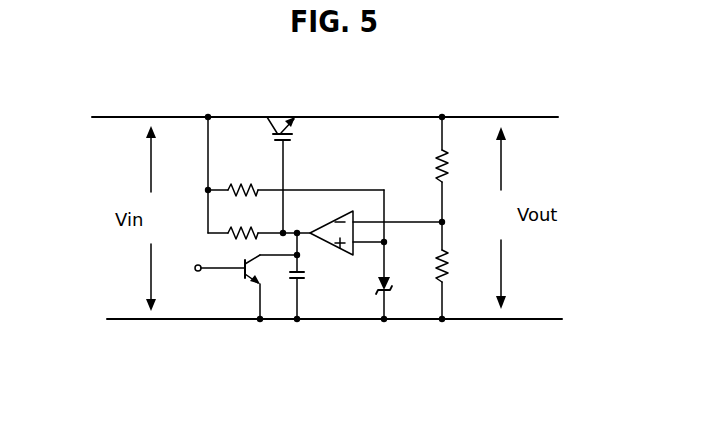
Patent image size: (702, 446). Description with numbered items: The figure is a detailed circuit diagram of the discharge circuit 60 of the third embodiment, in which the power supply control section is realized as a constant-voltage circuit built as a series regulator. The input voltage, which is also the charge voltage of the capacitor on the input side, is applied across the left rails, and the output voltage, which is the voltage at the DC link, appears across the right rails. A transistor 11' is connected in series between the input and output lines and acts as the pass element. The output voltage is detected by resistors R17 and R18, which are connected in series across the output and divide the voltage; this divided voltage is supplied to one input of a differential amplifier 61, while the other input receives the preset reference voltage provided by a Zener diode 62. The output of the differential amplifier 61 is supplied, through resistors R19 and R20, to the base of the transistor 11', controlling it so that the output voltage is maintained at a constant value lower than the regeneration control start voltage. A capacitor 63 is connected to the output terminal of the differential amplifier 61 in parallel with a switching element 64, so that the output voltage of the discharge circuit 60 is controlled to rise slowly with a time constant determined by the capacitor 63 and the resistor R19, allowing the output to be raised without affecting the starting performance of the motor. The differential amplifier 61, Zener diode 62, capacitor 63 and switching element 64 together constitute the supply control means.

The discharge circuit 60 is at (226, 96).
The transistor 11' is at (305, 157).
The differential amplifier 61 is at (335, 212).
The Zener diode 62 is at (378, 280).
The capacitor 63 is at (323, 273).
The switching element 64 is at (228, 278).
The resistor R17 is at (423, 169).
The resistor R18 is at (423, 270).
The resistor R19 is at (259, 223).
The resistor R20 is at (296, 198).